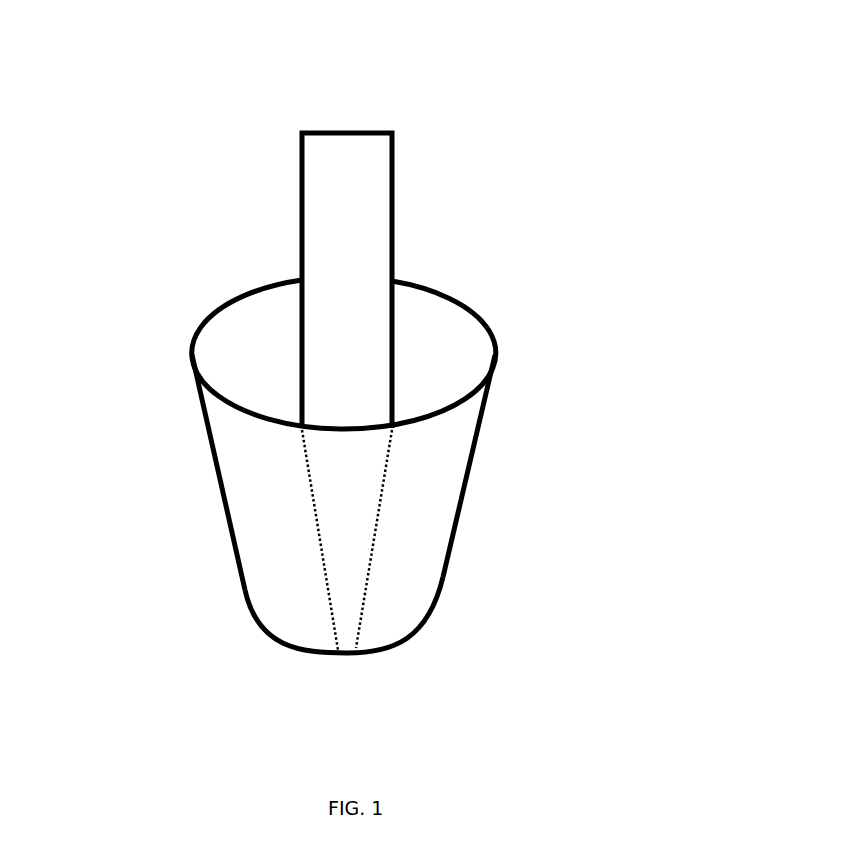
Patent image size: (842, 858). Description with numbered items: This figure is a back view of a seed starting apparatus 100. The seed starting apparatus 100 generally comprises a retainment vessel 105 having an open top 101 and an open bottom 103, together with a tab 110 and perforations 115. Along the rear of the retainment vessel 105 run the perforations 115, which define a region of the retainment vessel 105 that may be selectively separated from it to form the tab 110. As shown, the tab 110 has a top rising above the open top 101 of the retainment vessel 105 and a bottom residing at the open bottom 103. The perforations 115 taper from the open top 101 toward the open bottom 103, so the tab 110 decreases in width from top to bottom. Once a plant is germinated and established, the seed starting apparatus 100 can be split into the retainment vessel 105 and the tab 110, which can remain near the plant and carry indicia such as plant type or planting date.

The seed starting apparatus 100 is at (522, 33).
The tab 110 is at (338, 232).
The open top 101 is at (191, 345).
The retainment vessel 105 is at (462, 480).
The open bottom 103 is at (270, 637).
The perforations 115 is at (317, 519).